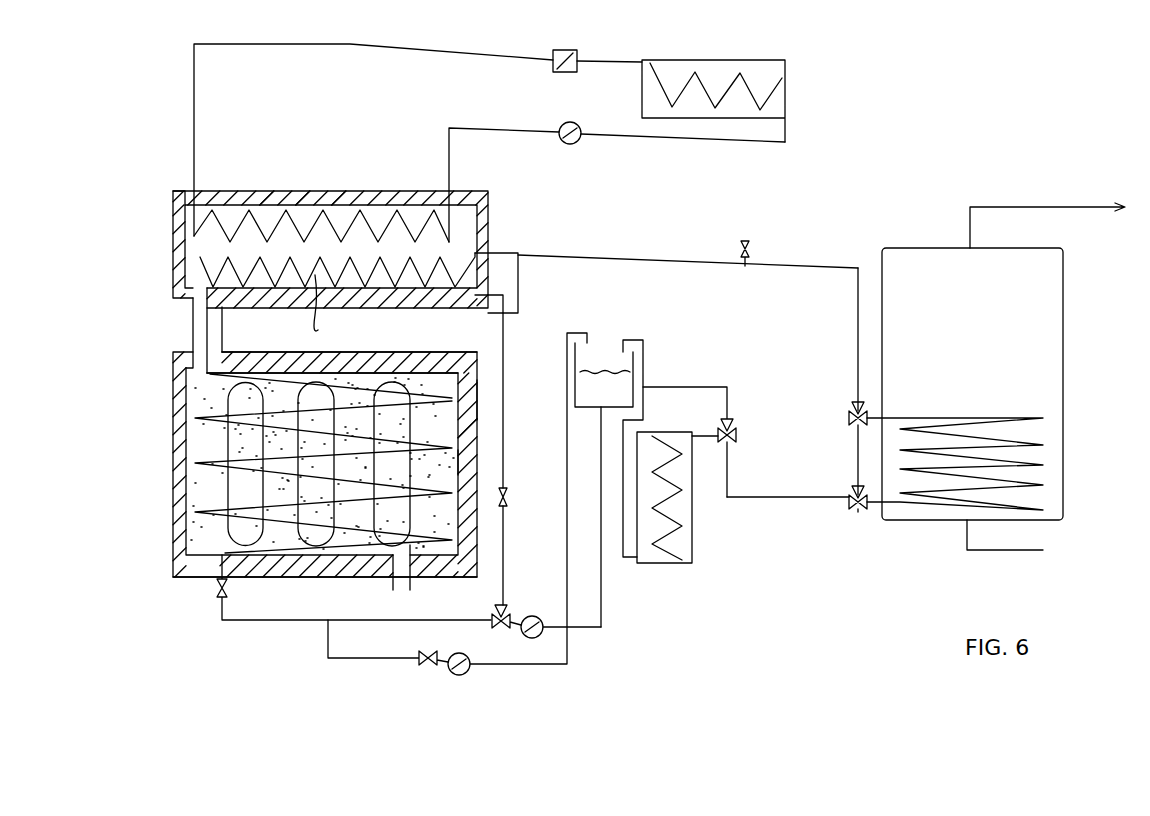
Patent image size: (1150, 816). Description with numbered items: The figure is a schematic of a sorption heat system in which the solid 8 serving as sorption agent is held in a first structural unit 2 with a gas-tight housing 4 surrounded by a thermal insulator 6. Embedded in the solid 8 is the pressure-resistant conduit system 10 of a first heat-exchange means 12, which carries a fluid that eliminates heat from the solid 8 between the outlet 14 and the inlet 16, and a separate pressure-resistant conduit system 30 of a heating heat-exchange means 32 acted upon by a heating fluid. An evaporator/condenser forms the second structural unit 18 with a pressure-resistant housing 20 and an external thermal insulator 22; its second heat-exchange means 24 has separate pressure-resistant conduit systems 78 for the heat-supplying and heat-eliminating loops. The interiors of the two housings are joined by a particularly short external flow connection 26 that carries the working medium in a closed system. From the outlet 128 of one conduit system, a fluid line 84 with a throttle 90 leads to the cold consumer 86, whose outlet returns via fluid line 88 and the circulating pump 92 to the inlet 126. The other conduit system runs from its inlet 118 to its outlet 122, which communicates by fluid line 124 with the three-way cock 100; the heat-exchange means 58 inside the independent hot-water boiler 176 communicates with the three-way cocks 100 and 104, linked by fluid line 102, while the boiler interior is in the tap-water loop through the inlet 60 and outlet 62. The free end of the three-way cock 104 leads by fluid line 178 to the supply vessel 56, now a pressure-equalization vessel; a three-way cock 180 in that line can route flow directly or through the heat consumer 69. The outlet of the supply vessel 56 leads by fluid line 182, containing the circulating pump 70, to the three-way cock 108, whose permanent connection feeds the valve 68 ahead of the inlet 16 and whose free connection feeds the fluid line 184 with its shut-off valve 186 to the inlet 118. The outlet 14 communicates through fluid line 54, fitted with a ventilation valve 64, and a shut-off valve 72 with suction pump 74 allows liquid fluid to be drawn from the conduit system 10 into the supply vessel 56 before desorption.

The first structural unit 2 is at (487, 382).
The gas-tight housing 4 is at (470, 398).
The thermal insulator 6 is at (470, 432).
The solid 8 is at (470, 462).
The pressure-resistant conduit system 10 is at (450, 511).
The first heat-exchange means 12 is at (435, 553).
The outlet 14 is at (240, 356).
The inlet 16 is at (207, 572).
The second structural unit 18 is at (273, 192).
The pressure-resistant housing 20 is at (312, 200).
The external thermal insulator 22 is at (350, 198).
The second heat-exchange means 24 is at (380, 210).
The external flow connection 26 is at (192, 331).
The pressure-resistant conduit system 30 is at (222, 450).
The heating heat-exchange means 32 is at (220, 500).
The fluid line 54 is at (434, 310).
The supply vessel 56 is at (647, 370).
The heat-exchange means 58 is at (1048, 429).
The inlet 60 is at (988, 552).
The outlet 62 is at (990, 207).
The ventilation valve 64 is at (752, 245).
The valve 68 is at (230, 589).
The heat consumer 69 is at (697, 526).
The circulating pump 70 is at (542, 636).
The shut-off valve 72 is at (415, 652).
The suction pump 74 is at (460, 653).
The pressure-resistant conduit systems 78 is at (213, 212).
The fluid line 84 is at (352, 54).
The cold consumer 86 is at (688, 59).
The fluid line 88 is at (622, 138).
The throttle 90 is at (578, 50).
The circulating pump 92 is at (571, 145).
The three-way cock 100 is at (848, 418).
The fluid line 102 is at (856, 468).
The three-way cock 104 is at (852, 508).
The three-way cock 108 is at (490, 615).
The inlet 118 is at (508, 294).
The outlet 122 is at (485, 250).
The fluid line 124 is at (535, 258).
The inlet 126 is at (452, 205).
The outlet 128 is at (185, 193).
The hot-water boiler 176 is at (1073, 353).
The fluid line 178 is at (788, 515).
The three-way cock 180 is at (736, 436).
The fluid line 182 is at (602, 594).
The fluid line 184 is at (505, 338).
The shut-off valve 186 is at (508, 494).